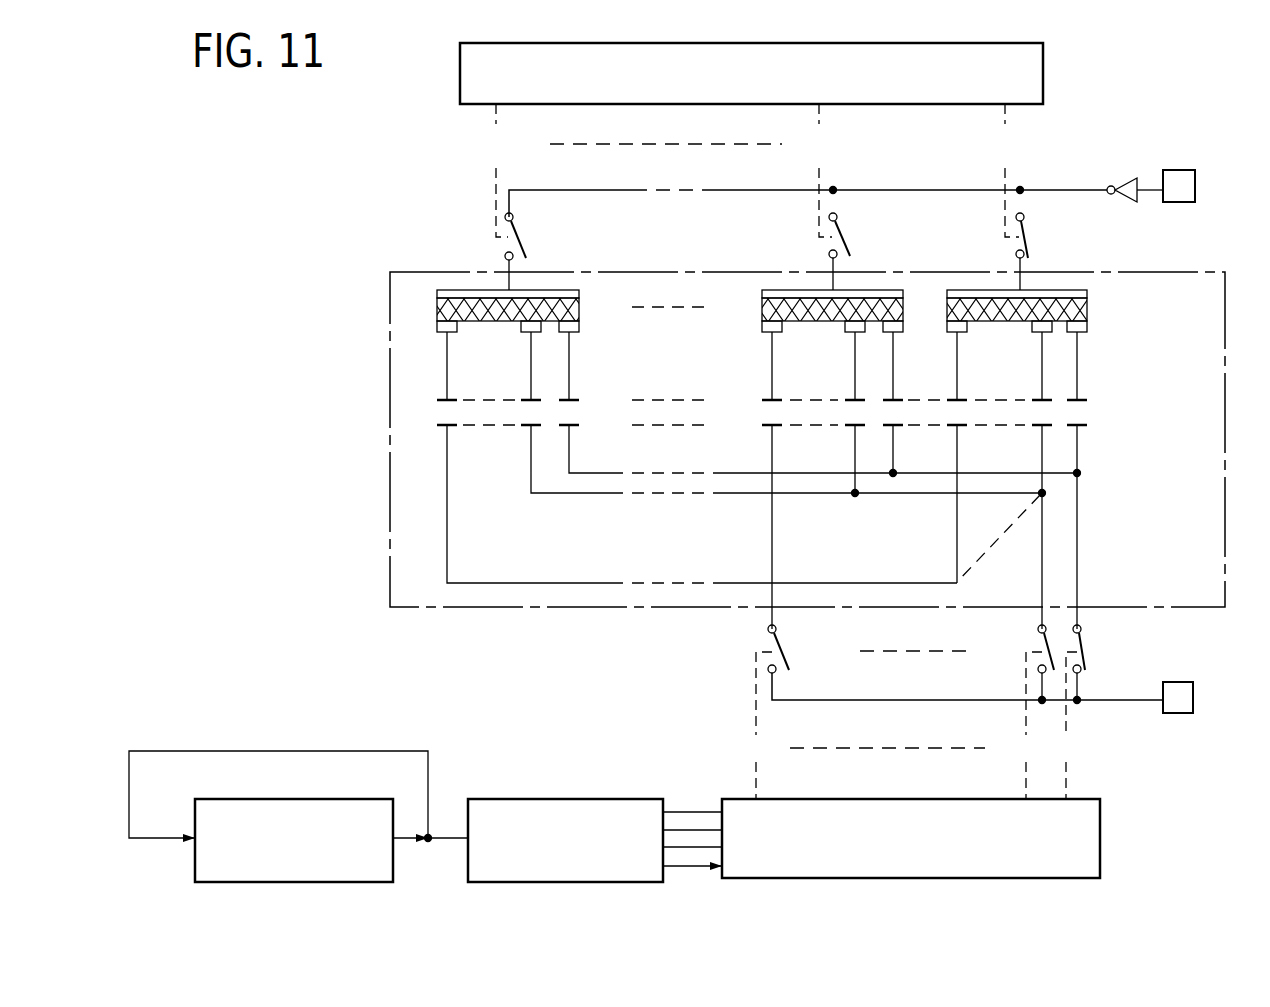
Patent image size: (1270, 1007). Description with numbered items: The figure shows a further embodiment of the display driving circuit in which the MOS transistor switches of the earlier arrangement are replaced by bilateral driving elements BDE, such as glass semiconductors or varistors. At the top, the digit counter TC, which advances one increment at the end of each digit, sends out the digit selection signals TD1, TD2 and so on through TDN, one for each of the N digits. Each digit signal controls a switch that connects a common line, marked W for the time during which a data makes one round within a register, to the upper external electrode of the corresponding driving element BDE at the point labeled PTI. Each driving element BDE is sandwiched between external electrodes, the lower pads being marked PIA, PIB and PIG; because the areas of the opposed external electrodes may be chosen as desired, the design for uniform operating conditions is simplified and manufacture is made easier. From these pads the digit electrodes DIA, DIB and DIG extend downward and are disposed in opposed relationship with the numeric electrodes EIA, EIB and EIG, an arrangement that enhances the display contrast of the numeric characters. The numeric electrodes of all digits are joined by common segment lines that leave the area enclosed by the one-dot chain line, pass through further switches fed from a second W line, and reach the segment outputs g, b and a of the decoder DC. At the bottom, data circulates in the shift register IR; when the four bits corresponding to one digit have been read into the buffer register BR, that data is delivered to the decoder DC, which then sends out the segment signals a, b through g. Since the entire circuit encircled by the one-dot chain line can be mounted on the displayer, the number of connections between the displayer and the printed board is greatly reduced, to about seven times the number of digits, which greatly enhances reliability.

The digit counter TC is at (1043, 68).
The digit signal TDN is at (496, 170).
The digit signal TD2 is at (819, 170).
The digit signal TD1 is at (1004, 170).
The round time W is at (1137, 442).
The digit electrode terminal PTI is at (1047, 290).
The bilateral driving element BDE is at (1087, 306).
The segment electrode a PIA is at (1087, 328).
The segment electrode b PIB is at (1040, 335).
The segment electrode g PIG is at (956, 335).
The digit electrode DIA is at (1080, 398).
The digit electrode DIB is at (1040, 396).
The digit electrode DIG is at (955, 396).
The numeric electrode EIA is at (1080, 428).
The numeric electrode EIB is at (1040, 428).
The numeric electrode EIG is at (958, 428).
The segment signal g is at (760, 725).
The segment signal b is at (1030, 725).
The segment signal a is at (1067, 725).
The decoder DC is at (1100, 830).
The buffer register BR is at (563, 799).
The shift register IR is at (195, 862).